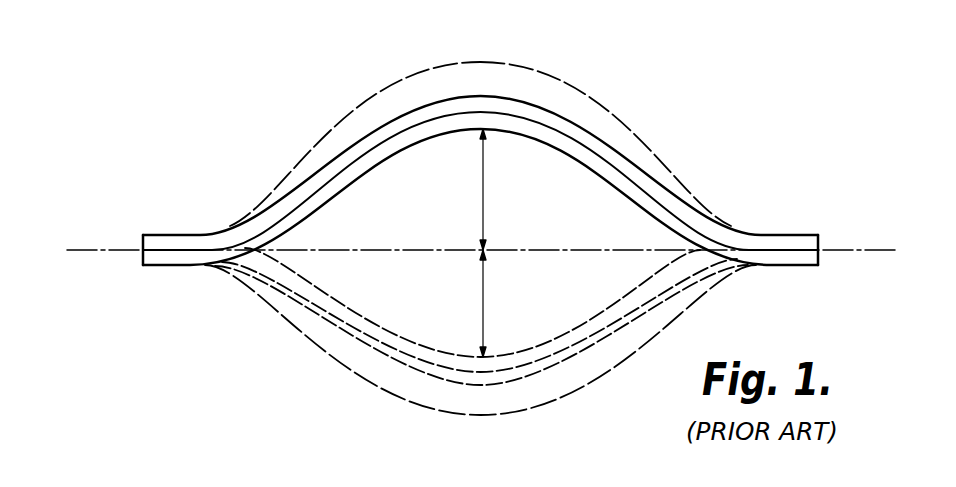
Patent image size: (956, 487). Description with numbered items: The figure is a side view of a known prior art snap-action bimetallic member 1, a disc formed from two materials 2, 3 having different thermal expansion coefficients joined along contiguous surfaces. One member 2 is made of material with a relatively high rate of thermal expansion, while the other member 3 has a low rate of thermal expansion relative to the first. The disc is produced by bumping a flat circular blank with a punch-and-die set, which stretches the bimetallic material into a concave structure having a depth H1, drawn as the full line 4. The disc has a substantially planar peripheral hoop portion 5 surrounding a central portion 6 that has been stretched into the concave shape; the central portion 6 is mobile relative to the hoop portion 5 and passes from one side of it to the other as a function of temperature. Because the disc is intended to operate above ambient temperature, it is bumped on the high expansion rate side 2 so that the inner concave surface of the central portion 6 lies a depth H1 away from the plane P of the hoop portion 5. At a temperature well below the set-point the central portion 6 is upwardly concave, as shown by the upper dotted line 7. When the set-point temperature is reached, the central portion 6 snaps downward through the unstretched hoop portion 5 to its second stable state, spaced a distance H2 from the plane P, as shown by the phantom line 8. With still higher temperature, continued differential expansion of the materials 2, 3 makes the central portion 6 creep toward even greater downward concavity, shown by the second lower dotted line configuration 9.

The bimetallic member 1 is at (480, 138).
The high expansion rate material 2 is at (570, 150).
The low expansion rate material 3 is at (582, 127).
The full line configuration 4 is at (460, 95).
The peripheral hoop portion 5 is at (163, 234).
The central portion 6 is at (377, 127).
The upper dotted line 7 is at (543, 71).
The phantom line 8 is at (383, 366).
The second lower dotted line configuration 9 is at (570, 396).
The plane of the peripheral hoop portion P is at (90, 250).
The depth H1 is at (483, 185).
The distance H2 is at (483, 300).